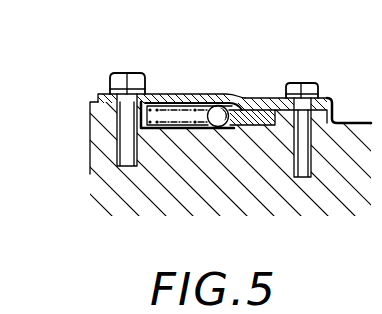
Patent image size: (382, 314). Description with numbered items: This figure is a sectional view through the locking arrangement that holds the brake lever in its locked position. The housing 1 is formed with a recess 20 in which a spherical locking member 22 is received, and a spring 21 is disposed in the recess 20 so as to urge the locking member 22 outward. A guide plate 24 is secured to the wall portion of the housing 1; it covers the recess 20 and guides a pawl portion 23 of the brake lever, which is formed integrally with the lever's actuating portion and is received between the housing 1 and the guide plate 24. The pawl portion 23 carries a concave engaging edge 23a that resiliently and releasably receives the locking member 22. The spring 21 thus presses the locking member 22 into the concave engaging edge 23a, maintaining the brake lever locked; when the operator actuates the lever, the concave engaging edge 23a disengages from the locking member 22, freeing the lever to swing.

The housing 1 is at (99, 136).
The recess 20 is at (177, 128).
The spring 21 is at (158, 107).
The spherical locking member 22 is at (230, 102).
The pawl portion 23 is at (259, 100).
The concave engaging edge 23a is at (268, 118).
The guide plate 24 is at (199, 97).